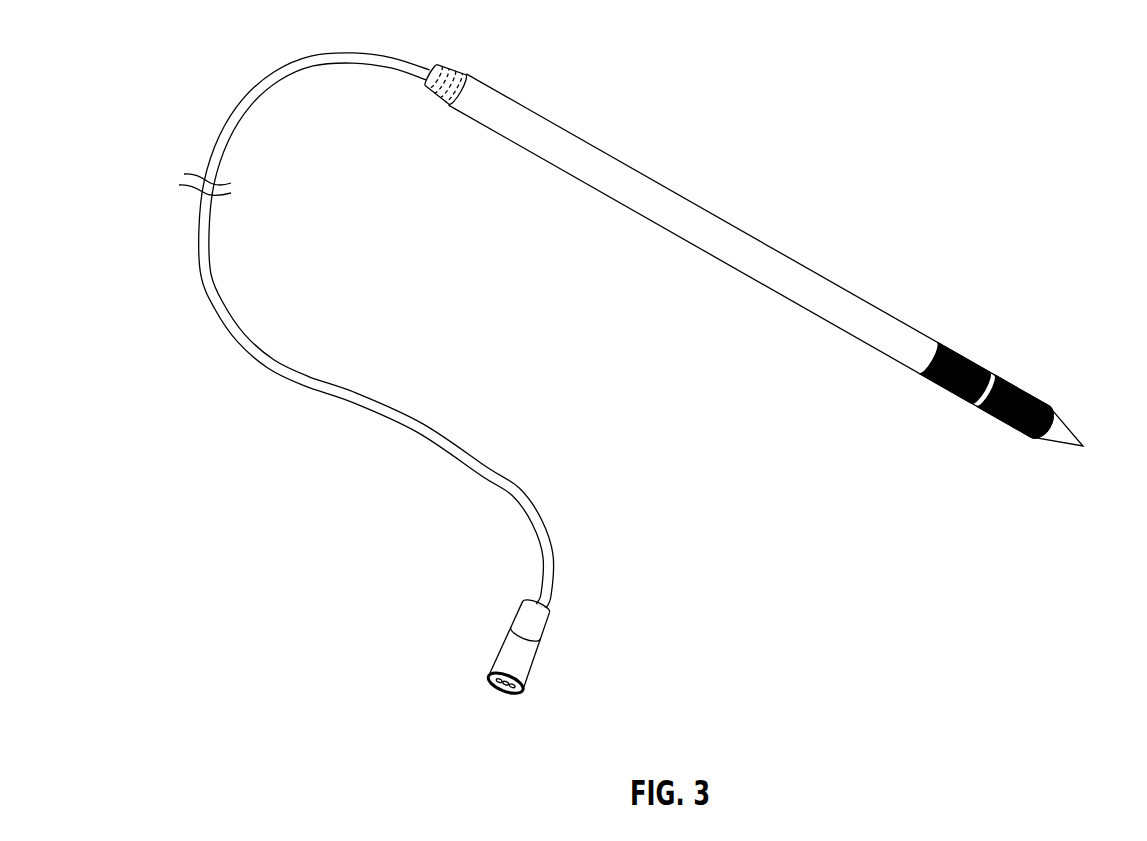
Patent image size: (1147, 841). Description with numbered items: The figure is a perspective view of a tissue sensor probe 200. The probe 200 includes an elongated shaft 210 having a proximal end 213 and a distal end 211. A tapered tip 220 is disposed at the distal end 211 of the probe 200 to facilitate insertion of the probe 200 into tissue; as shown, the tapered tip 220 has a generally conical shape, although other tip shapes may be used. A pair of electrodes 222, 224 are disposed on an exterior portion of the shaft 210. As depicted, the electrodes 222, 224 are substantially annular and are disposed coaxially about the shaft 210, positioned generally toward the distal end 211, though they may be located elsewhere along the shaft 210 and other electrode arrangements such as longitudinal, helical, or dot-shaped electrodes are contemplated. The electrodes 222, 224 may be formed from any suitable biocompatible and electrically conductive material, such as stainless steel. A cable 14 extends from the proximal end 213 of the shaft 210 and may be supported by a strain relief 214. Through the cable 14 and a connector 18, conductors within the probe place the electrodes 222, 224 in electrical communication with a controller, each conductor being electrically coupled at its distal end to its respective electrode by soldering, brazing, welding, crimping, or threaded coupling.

The cable 14 is at (344, 400).
The connector 18 is at (530, 677).
The tissue sensor probe 200 is at (756, 260).
The elongated shaft 210 is at (778, 273).
The distal end 211 is at (1045, 424).
The proximal end 213 is at (487, 107).
The strain relief 214 is at (445, 82).
The tapered tip 220 is at (1061, 434).
The electrode 222 is at (1018, 409).
The electrode 224 is at (956, 373).